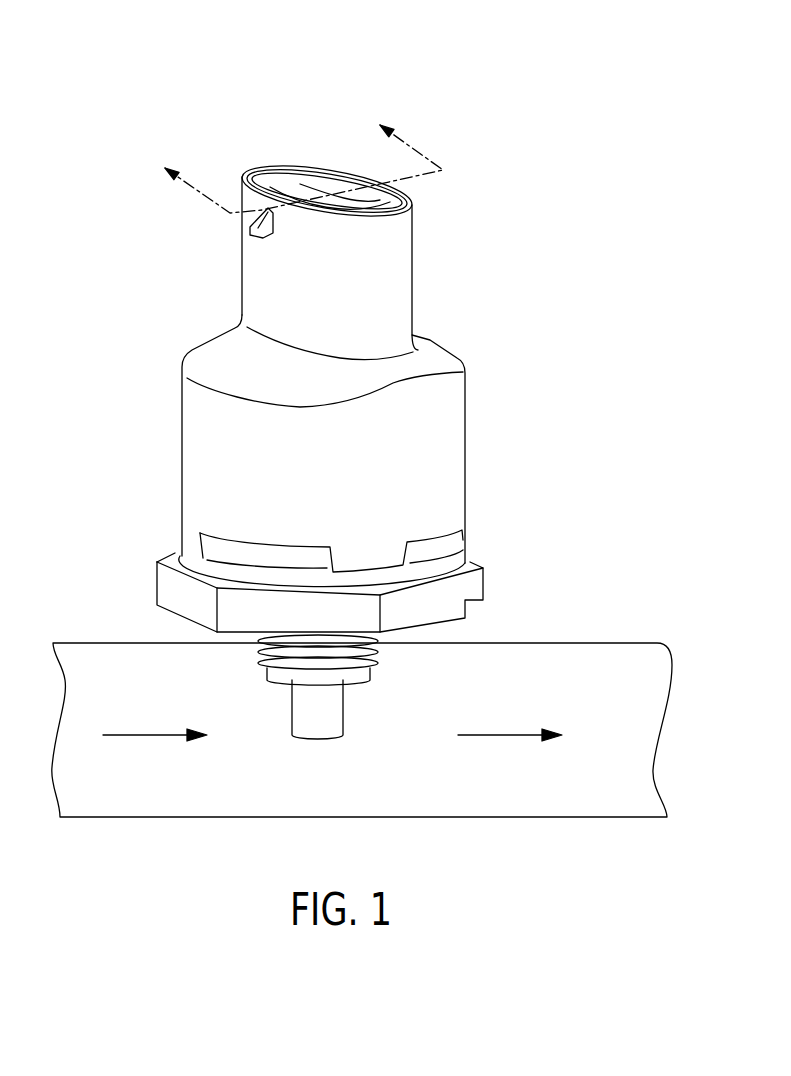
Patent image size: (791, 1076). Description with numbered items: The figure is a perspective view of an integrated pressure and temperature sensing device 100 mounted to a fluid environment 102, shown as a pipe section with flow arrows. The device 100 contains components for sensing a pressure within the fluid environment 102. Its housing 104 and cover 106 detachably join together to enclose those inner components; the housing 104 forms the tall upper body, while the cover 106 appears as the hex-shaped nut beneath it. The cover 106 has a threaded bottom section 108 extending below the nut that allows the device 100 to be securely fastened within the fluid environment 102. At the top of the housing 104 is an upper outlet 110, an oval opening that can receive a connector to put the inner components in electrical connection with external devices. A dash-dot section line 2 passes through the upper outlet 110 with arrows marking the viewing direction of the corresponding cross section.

The integrated pressure and temperature sensing device 100 is at (115, 75).
The fluid environment 102 is at (608, 658).
The housing 104 is at (448, 358).
The cover 106 is at (477, 587).
The threaded portion / sensing probe 108 is at (270, 657).
The upper outlet 110 is at (258, 168).
The section line 2- 2 is at (297, 155).